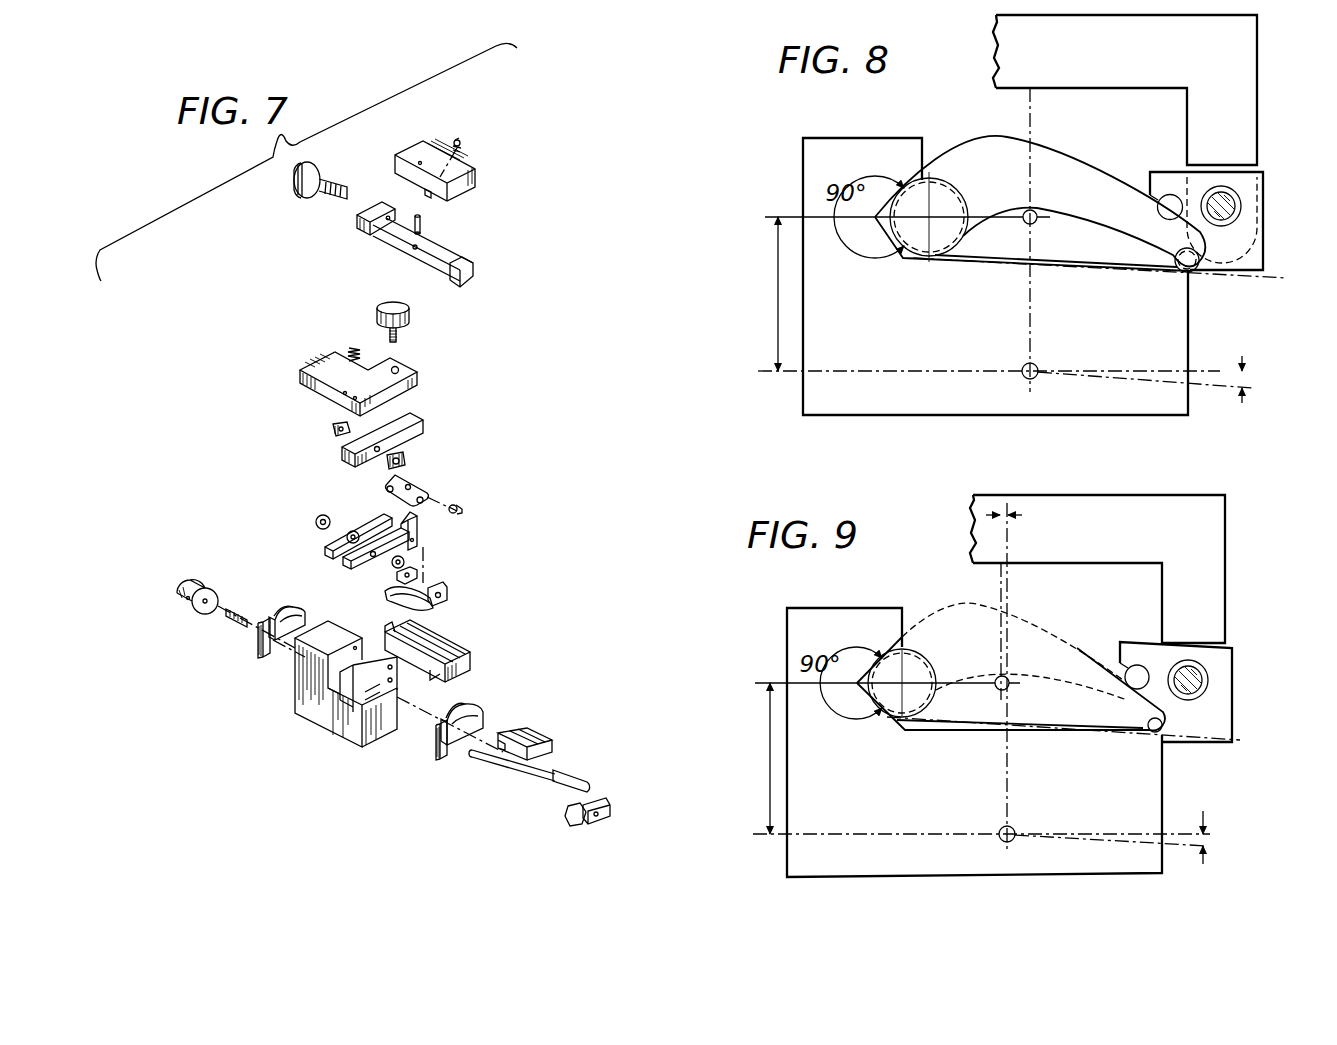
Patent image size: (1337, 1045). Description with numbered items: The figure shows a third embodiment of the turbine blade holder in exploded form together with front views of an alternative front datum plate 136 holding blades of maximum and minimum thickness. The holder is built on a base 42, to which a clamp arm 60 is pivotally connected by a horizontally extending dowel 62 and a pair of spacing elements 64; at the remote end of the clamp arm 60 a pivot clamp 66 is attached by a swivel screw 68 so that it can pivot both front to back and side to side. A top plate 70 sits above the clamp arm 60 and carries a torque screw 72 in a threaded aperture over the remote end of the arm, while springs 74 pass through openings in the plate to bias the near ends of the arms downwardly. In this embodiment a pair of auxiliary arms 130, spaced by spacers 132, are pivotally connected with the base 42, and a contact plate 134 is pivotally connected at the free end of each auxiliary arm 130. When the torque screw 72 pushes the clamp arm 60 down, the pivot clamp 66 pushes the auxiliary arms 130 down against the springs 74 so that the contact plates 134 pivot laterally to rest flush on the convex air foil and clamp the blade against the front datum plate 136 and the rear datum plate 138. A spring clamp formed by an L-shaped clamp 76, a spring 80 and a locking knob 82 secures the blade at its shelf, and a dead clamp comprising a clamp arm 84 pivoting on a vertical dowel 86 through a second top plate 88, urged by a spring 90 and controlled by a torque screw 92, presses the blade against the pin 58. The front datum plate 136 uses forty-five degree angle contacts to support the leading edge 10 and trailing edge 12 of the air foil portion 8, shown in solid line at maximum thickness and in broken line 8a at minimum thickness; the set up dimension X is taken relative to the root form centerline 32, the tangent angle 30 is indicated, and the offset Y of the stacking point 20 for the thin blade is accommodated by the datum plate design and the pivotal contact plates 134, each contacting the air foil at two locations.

In FIG. 7, the air foil portion 8 is at (285, 612).
In FIG. 8, the air foil portion 8 is at (969, 144).
In FIG. 9, the air foil portion 8 is at (935, 615).
In FIG. 8, the air foil portion of minimum thickness 8a is at (905, 186).
In FIG. 9, the air foil portion of minimum thickness 8a is at (877, 663).
In FIG. 7, the leading edge 10 is at (282, 640).
In FIG. 8, the leading edge 10 is at (905, 258).
In FIG. 9, the leading edge 10 is at (883, 715).
In FIG. 7, the trailing edge 12 is at (480, 713).
In FIG. 8, the trailing edge 12 is at (1175, 272).
In FIG. 9, the trailing edge 12 is at (1148, 733).
In FIG. 8, the stacking point 20 is at (1033, 215).
In FIG. 9, the stacking point 20 is at (1005, 681).
In FIG. 8, the tangent angle 30 is at (1215, 392).
In FIG. 9, the tangent angle 30 is at (1187, 850).
In FIG. 8, the root form centerline 32 is at (786, 215).
In FIG. 9, the root form centerline 32 is at (775, 687).
In FIG. 7, the base 42 is at (450, 645).
In FIG. 7, the pin 58 is at (503, 733).
In FIG. 7, the clamp arm 60 is at (417, 423).
In FIG. 7, the dowel 62 is at (573, 773).
In FIG. 7, the spacing elements 64 is at (332, 430).
In FIG. 7, the pivot clamp 66 is at (417, 482).
In FIG. 7, the swivel screw 68 is at (462, 503).
In FIG. 7, the top plate 70 is at (405, 362).
In FIG. 7, the torque screw 72 is at (390, 303).
In FIG. 7, the spring 74 is at (353, 347).
In FIG. 7, the L-shaped clamp 76 is at (575, 818).
In FIG. 7, the spring 80 is at (238, 608).
In FIG. 7, the locking knob 82 is at (193, 583).
In FIG. 7, the clamp arm 84 is at (467, 270).
In FIG. 7, the dowel 86 is at (420, 230).
In FIG. 7, the second top plate 88 is at (472, 177).
In FIG. 7, the spring 90 is at (463, 140).
In FIG. 7, the torque screw 92 is at (332, 190).
In FIG. 7, the auxiliary arms 130 is at (323, 547).
In FIG. 8, the auxiliary arms 130 is at (1248, 92).
In FIG. 9, the auxiliary arms 130 is at (1215, 538).
In FIG. 7, the spacers 132 is at (323, 517).
In FIG. 7, the contact plate 134 is at (443, 593).
In FIG. 8, the contact plate 134 is at (1269, 200).
In FIG. 9, the contact plate 134 is at (1232, 705).
In FIG. 7, the front datum plate 136 is at (450, 758).
In FIG. 8, the front datum plate 136 is at (1186, 313).
In FIG. 9, the front datum plate 136 is at (1152, 793).
In FIG. 7, the rear datum plate 138 is at (257, 652).